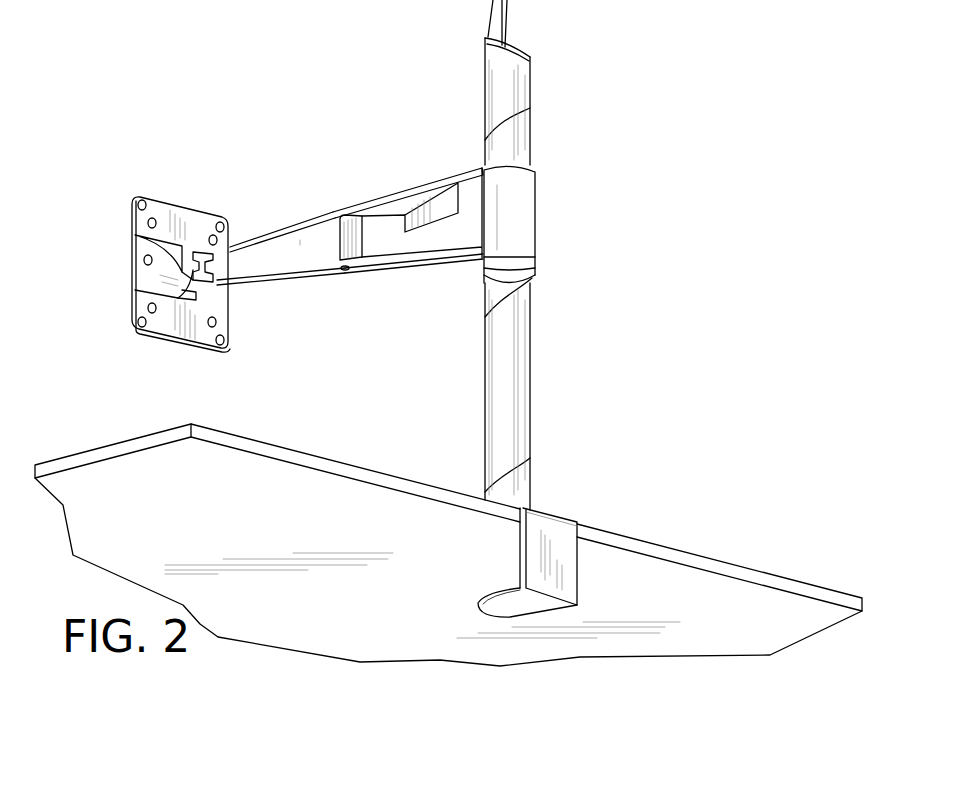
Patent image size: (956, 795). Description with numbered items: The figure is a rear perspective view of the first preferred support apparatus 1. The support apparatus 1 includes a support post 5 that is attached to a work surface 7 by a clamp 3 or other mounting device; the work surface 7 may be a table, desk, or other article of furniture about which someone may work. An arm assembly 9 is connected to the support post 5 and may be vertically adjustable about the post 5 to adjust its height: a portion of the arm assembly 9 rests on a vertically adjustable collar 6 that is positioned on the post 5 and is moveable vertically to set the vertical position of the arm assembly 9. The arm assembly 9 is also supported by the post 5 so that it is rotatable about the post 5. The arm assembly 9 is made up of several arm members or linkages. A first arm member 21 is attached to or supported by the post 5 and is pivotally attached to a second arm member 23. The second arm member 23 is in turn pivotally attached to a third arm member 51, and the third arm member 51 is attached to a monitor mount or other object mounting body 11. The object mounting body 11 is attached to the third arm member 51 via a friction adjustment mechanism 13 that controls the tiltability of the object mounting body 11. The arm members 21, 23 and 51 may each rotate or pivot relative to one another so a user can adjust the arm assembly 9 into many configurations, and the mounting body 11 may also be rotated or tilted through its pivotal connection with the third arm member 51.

The support apparatus 1 is at (357, 255).
The clamp 3 is at (568, 553).
The support post 5 is at (527, 360).
The vertically adjustable collar 6 is at (535, 272).
The work surface 7 is at (290, 447).
The arm assembly 9 is at (427, 170).
The object mounting body 11 is at (215, 208).
The friction adjustment mechanism 13 is at (130, 250).
The first arm member 21 is at (402, 265).
The second arm member 23 is at (276, 262).
The third arm member 51 is at (175, 327).